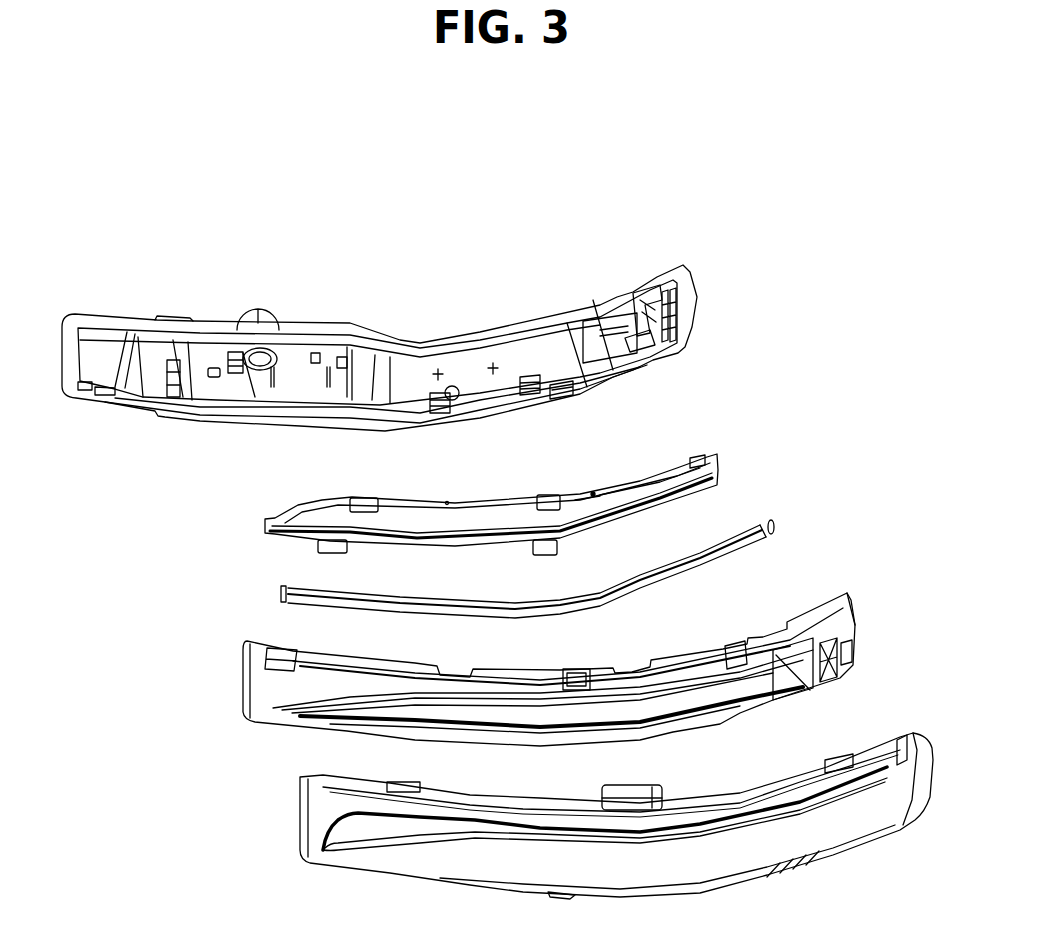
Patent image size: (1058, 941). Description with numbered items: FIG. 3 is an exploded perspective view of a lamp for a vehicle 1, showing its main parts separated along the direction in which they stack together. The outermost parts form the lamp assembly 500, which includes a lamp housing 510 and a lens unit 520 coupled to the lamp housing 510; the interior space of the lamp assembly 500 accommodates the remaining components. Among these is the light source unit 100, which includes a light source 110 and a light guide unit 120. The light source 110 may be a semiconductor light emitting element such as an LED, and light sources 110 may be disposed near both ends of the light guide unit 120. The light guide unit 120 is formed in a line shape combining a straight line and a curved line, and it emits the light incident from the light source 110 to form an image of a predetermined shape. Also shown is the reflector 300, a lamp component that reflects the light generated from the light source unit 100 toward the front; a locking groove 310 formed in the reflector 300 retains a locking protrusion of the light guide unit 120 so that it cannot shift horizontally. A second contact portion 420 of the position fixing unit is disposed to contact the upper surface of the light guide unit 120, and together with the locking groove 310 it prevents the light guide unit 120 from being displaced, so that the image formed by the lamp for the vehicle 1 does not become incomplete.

The lamp for a vehicle 1 is at (600, 148).
The light source unit 100 is at (858, 527).
The light source 110 is at (777, 527).
The light guide unit 120 is at (750, 560).
The reflector 300 is at (643, 492).
The locking groove 310 is at (585, 520).
The second contact portion 420 is at (460, 530).
The lamp assembly 500 is at (135, 492).
The lamp housing 510 is at (103, 367).
The lens unit 520 is at (322, 813).